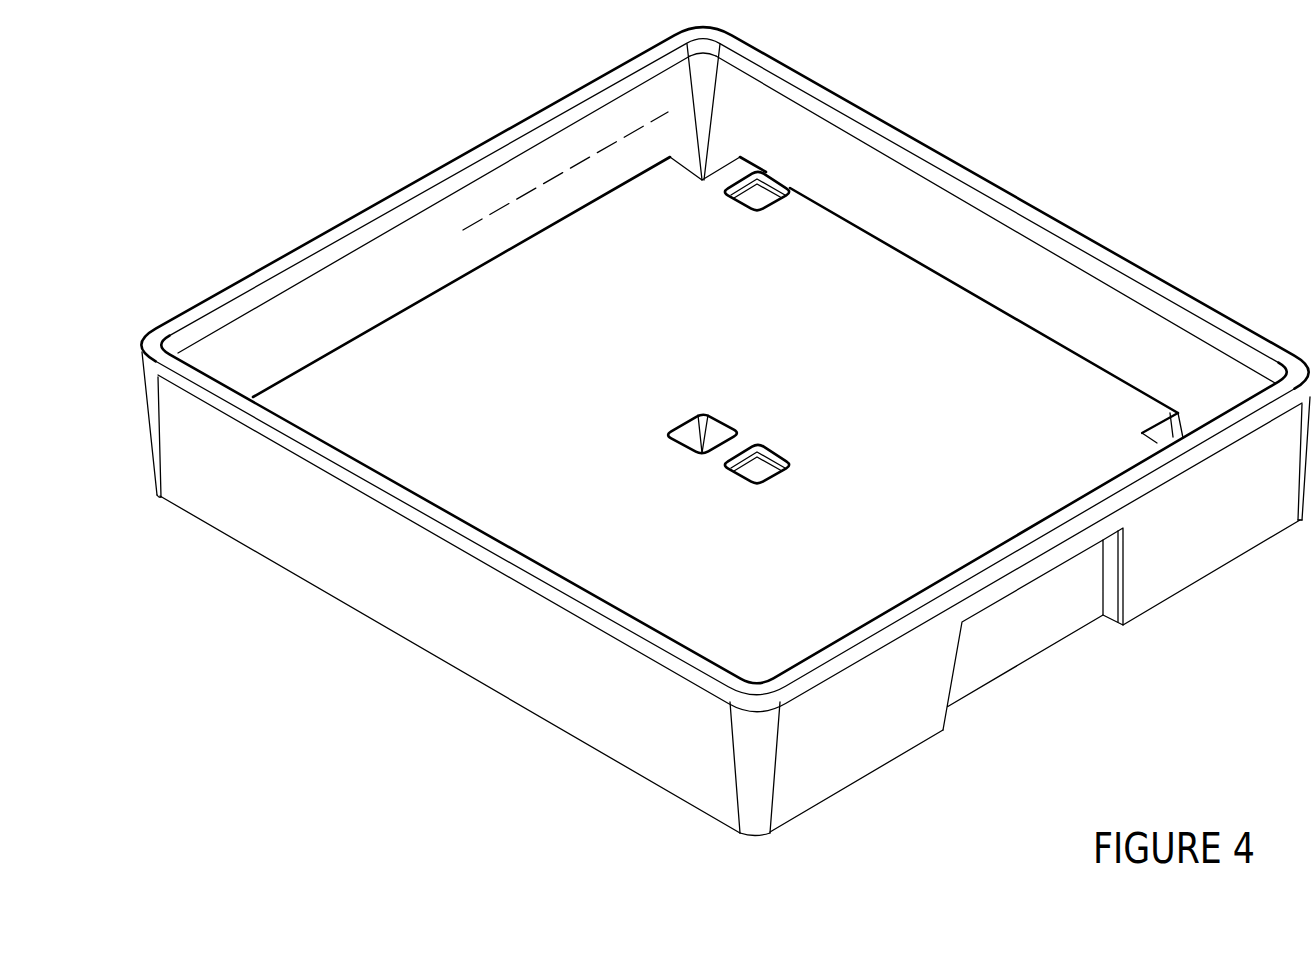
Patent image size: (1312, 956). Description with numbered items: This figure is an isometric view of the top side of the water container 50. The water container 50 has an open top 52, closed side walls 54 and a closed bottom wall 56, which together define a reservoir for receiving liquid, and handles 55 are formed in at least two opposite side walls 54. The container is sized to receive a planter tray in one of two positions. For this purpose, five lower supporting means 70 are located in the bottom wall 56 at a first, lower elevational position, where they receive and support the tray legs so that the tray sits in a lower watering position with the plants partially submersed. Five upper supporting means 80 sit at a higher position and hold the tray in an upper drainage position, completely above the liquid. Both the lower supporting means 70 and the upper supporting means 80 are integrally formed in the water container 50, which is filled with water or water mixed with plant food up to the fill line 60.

The water container 50 is at (912, 138).
The open top 52 is at (307, 334).
The side walls 54 is at (386, 247).
The handles 55 is at (1027, 618).
The bottom wall 56 is at (818, 365).
The fill line 60 is at (568, 167).
The lower supporting means 70 is at (707, 173).
The upper supporting means 80 is at (753, 197).